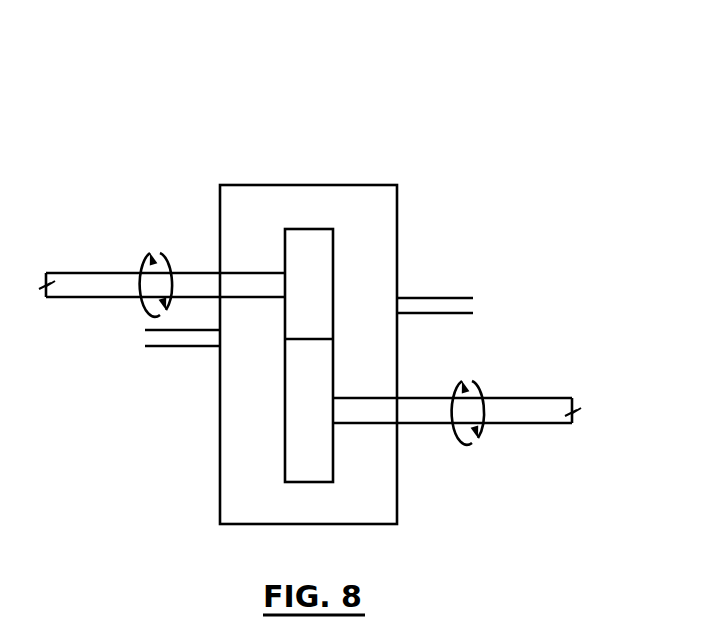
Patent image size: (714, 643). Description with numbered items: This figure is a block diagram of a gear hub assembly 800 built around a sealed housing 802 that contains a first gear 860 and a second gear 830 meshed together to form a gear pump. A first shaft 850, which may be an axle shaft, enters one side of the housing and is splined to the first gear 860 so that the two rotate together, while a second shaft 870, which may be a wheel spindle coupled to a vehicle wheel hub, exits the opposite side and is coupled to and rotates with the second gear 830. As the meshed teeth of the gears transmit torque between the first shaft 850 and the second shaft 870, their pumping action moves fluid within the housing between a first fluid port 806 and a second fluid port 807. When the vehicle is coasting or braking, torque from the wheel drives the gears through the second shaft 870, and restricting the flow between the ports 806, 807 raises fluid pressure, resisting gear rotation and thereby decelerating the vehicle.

The gear hub assembly 800 is at (372, 150).
The sealed housing 802 is at (397, 210).
The first fluid port 806 is at (397, 297).
The second fluid port 807 is at (220, 347).
The second gear 830 is at (330, 372).
The first shaft 850 is at (115, 250).
The first gear 860 is at (322, 266).
The second shaft 870 is at (530, 382).